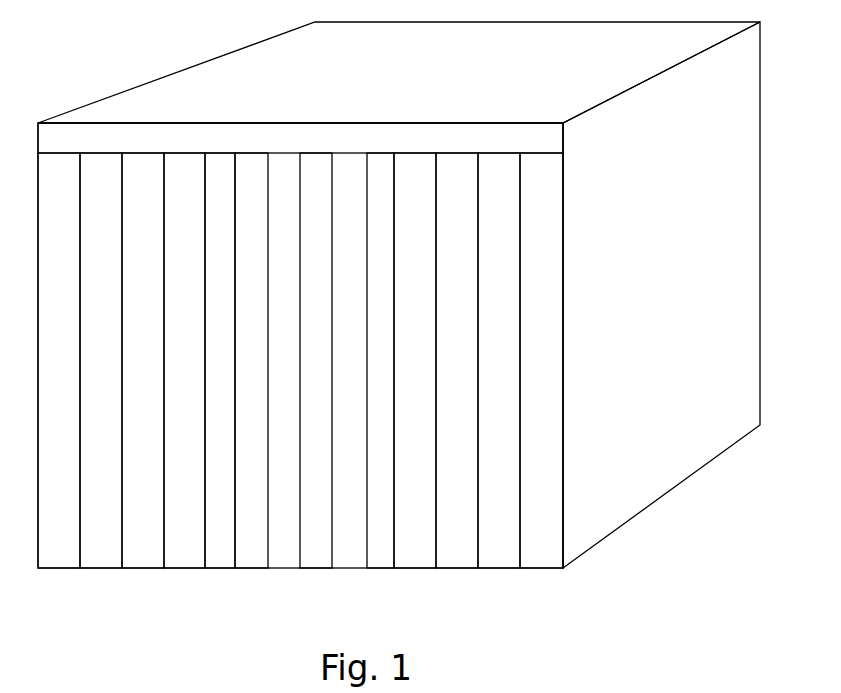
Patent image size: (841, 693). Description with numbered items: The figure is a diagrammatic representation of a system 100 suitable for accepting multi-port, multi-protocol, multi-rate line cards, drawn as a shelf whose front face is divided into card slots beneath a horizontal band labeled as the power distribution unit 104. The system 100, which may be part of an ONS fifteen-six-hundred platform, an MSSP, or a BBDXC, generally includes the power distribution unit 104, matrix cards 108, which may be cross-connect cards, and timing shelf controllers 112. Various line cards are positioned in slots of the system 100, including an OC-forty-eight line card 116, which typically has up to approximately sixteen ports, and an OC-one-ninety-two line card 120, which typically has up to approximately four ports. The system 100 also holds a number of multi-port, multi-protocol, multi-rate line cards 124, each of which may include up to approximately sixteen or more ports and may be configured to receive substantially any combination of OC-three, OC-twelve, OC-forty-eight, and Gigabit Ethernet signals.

The system 100 is at (694, 573).
The power distribution unit 104 is at (469, 122).
The matrix cards 108 is at (253, 568).
The timing shelf controllers 112 is at (225, 568).
The OC-48 line card 116 is at (450, 568).
The OC-192 line card 120 is at (528, 568).
The multi-port, multi-protocol, multi-rate line card 124 is at (52, 568).